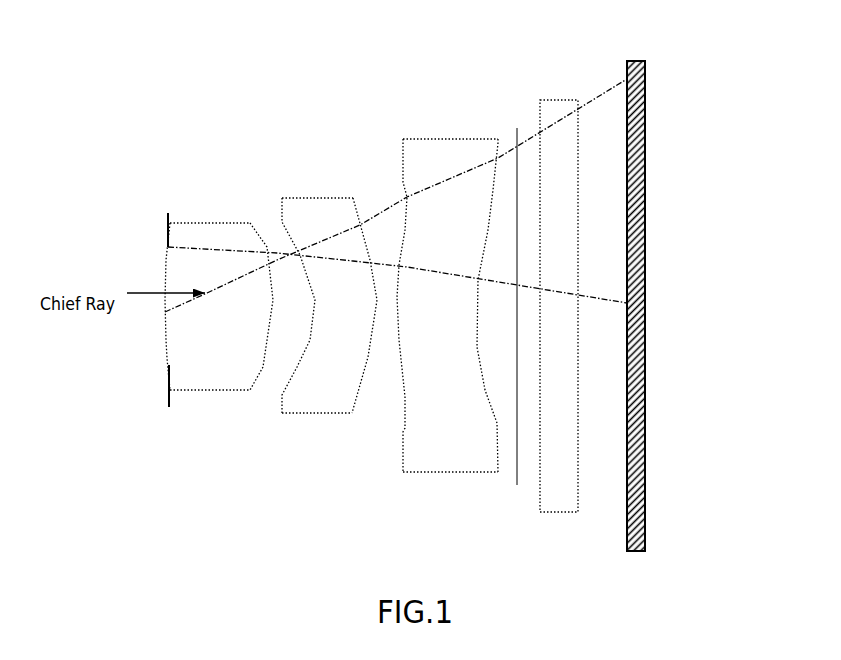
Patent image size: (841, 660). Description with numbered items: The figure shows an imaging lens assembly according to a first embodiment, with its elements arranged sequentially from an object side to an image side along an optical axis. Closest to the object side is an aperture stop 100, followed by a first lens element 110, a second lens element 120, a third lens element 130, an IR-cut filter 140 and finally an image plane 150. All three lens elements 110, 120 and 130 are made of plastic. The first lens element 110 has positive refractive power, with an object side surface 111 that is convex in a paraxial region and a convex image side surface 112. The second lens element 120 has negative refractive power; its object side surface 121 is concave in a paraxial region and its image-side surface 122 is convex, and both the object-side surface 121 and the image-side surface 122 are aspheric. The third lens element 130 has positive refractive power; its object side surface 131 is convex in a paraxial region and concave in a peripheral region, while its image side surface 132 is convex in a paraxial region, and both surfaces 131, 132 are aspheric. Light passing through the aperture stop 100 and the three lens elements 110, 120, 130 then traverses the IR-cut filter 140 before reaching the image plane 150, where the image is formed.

The aperture stop 100 is at (167, 211).
The first lens element 110 is at (194, 299).
The object side surface of the first lens element 111 is at (165, 358).
The image side surface of the first lens element 112 is at (263, 357).
The second lens element 120 is at (313, 292).
The object side surface of the second lens element 121 is at (295, 365).
The image-side surface of the second lens element 122 is at (366, 358).
The third lens element 130 is at (425, 287).
The object side surface of the third lens element 131 is at (406, 407).
The image side surface of the third lens element 132 is at (495, 423).
The IR-cut filter 140 is at (548, 97).
The image plane 150 is at (644, 61).